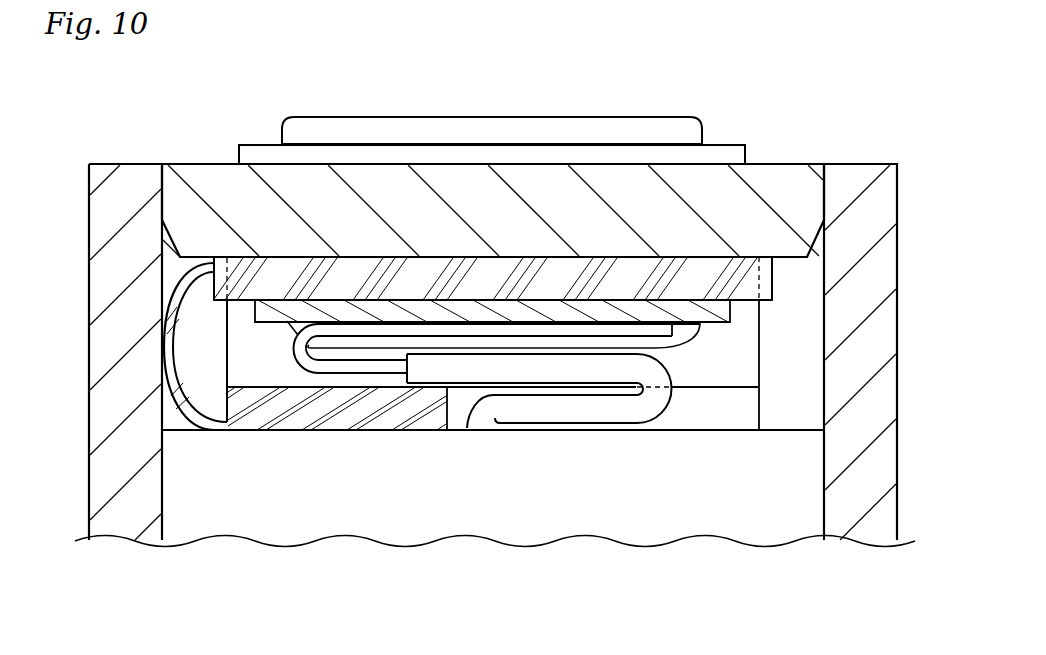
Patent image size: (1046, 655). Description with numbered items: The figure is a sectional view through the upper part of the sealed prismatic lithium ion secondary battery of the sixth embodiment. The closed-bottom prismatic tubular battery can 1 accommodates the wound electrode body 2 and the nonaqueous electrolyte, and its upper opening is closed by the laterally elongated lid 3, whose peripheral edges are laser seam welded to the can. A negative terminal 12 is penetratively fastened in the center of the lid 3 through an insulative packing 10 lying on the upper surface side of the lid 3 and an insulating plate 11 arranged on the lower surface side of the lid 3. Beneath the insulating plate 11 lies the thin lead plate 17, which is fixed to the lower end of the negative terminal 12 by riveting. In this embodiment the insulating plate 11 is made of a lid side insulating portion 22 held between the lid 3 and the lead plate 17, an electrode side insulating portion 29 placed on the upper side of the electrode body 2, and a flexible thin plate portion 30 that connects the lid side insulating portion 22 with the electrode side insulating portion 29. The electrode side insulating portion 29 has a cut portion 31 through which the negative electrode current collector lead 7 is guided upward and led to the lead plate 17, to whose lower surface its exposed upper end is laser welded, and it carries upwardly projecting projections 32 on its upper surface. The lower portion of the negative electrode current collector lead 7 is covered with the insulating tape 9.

The battery can 1 is at (89, 218).
The electrode body 2 is at (342, 520).
The lid 3 is at (773, 164).
The negative electrode current collector lead 7 is at (294, 351).
The insulating tape 9 is at (572, 408).
The insulative packing 10 is at (721, 143).
The insulating plate 11 is at (446, 250).
The negative terminal 12 is at (503, 122).
The lead plate 17 is at (661, 318).
The lid side insulating portion 22 is at (587, 278).
The electrode side insulating portion 29 is at (352, 420).
The thin plate portion 30 is at (170, 412).
The cut portion 31 is at (448, 408).
The projections 32 is at (727, 343).